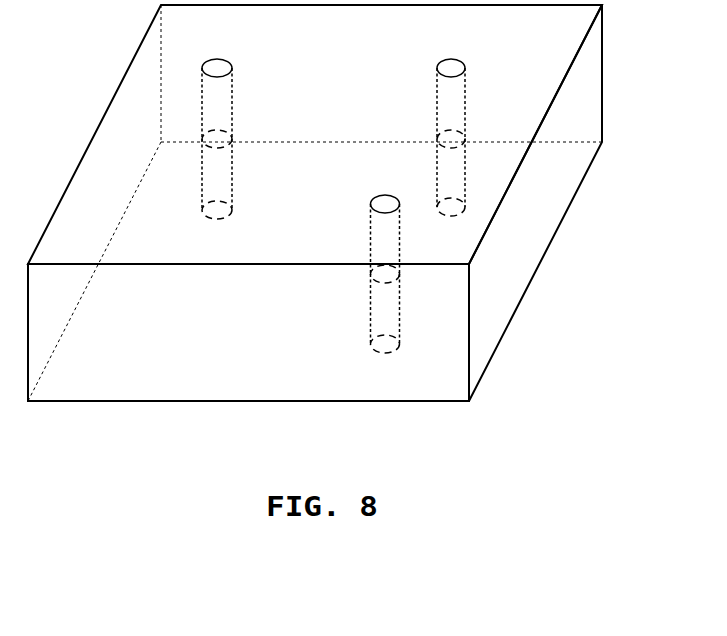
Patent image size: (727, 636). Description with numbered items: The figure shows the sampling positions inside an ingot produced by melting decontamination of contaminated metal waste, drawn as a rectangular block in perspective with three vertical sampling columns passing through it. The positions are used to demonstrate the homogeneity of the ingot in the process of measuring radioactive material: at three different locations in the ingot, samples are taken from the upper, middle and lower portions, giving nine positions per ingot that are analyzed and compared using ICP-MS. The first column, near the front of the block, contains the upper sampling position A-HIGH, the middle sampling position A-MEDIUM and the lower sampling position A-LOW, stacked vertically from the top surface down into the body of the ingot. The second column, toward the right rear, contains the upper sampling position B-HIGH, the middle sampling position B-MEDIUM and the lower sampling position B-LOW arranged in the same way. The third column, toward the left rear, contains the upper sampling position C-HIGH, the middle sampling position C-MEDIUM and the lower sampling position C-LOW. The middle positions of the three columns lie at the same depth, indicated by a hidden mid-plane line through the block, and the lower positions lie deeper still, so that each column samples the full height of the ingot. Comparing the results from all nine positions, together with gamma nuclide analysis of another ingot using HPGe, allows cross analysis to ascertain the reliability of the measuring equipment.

The upper sampling position A A-HIGH is at (340, 232).
The middle sampling position A A-MEDIUM is at (340, 302).
The lower sampling position A A-LOW is at (340, 344).
The upper sampling position B B-HIGH is at (483, 97).
The middle sampling position B B-MEDIUM is at (495, 166).
The lower sampling position B B-LOW is at (482, 207).
The upper sampling position C C-HIGH is at (172, 97).
The middle sampling position C C-MEDIUM is at (172, 167).
The lower sampling position C C-LOW is at (172, 207).